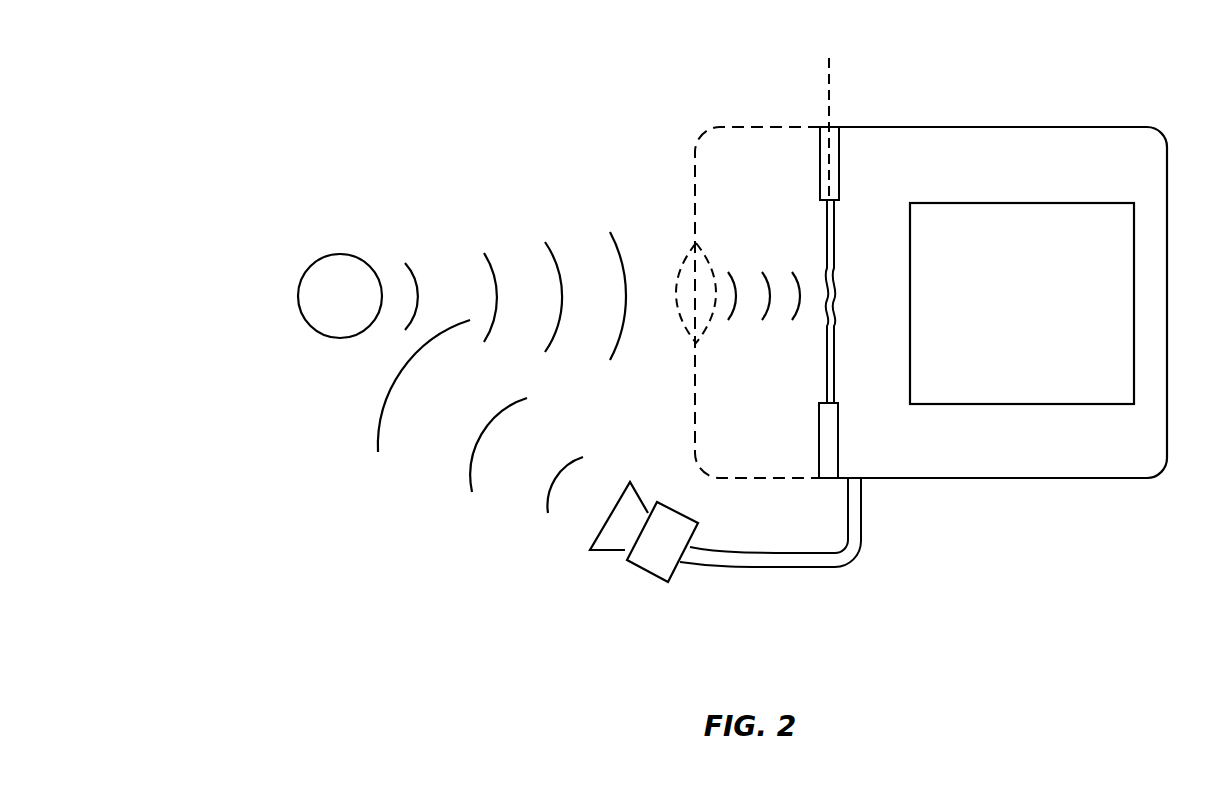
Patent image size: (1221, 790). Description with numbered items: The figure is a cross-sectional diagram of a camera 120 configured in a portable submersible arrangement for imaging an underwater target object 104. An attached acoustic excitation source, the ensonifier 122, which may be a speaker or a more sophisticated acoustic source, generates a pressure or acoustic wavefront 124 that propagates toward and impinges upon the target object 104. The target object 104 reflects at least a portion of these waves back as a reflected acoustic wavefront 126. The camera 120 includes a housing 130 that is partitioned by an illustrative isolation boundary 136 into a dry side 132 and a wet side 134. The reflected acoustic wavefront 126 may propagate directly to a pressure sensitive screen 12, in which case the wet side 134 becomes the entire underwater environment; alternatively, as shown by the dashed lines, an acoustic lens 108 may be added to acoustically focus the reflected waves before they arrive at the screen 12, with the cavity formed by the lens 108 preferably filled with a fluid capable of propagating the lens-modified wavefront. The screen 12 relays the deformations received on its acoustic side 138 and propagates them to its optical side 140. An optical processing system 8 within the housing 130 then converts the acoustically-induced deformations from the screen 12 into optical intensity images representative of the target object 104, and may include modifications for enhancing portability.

The optical processing system 8 is at (1022, 303).
The pressure sensitive screen 12 is at (838, 245).
The target object 104 is at (323, 255).
The acoustic lens 108 is at (689, 264).
The camera 120 is at (963, 247).
The ensonifier 122 is at (650, 575).
The acoustic wavefront 124 is at (476, 526).
The reflected acoustic wavefront 126 is at (524, 236).
The housing 130 is at (1003, 127).
The dry side 132 is at (892, 158).
The wet side 134 is at (757, 302).
The isolation boundary 136 is at (830, 78).
The acoustic side 138 is at (808, 333).
The optical side 140 is at (854, 332).